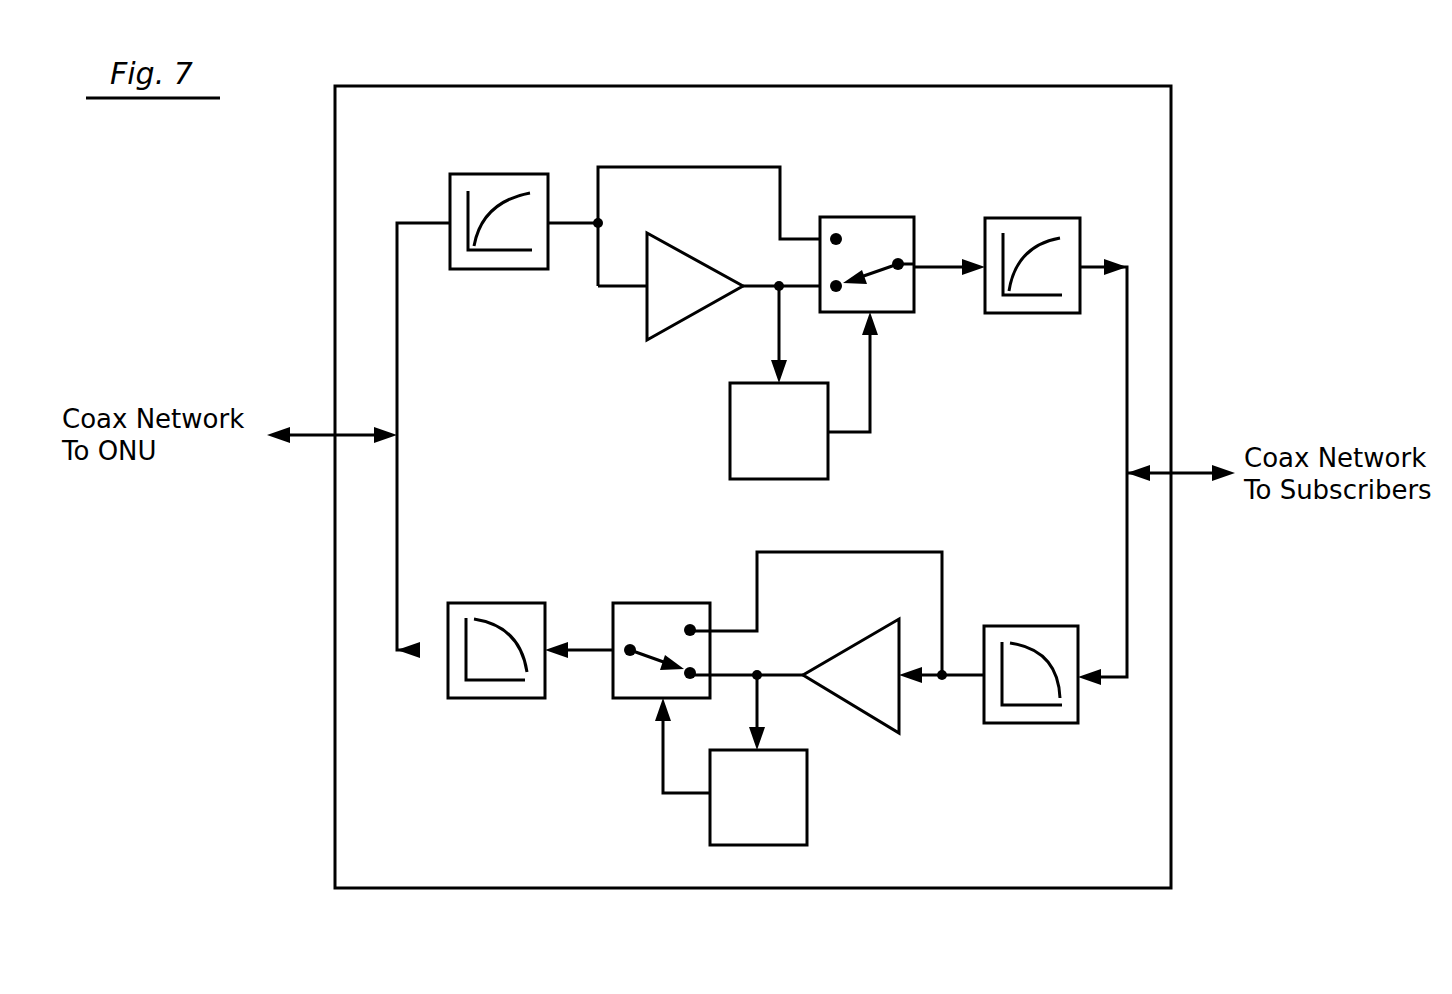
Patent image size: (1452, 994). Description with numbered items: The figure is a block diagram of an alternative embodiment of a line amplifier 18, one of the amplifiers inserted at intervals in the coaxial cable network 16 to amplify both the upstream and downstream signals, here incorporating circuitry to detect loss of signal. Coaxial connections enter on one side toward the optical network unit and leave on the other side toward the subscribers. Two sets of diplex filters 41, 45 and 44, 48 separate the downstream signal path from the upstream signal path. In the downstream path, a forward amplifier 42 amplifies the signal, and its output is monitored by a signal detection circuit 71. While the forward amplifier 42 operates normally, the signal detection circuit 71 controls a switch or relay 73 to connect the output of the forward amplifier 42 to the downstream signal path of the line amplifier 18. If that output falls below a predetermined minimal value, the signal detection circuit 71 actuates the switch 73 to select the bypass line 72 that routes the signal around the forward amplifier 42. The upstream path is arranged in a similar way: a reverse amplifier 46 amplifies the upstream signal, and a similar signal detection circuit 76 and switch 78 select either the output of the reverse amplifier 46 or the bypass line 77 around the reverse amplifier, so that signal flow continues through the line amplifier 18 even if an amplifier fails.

The coaxial cable network 16 is at (310, 437).
The line amplifier 18 is at (1192, 765).
The diplex filter 41 is at (496, 174).
The forward amplifier 42 is at (693, 299).
The diplex filter 44 is at (1037, 218).
The diplex filter 45 is at (498, 603).
The reverse amplifier 46 is at (882, 689).
The diplex filter 48 is at (1037, 626).
The signal detection circuit 71 is at (795, 445).
The bypass line 72 is at (710, 167).
The switch 73 is at (878, 217).
The signal detection circuit 76 is at (776, 810).
The bypass line 77 is at (862, 552).
The switch 78 is at (668, 603).